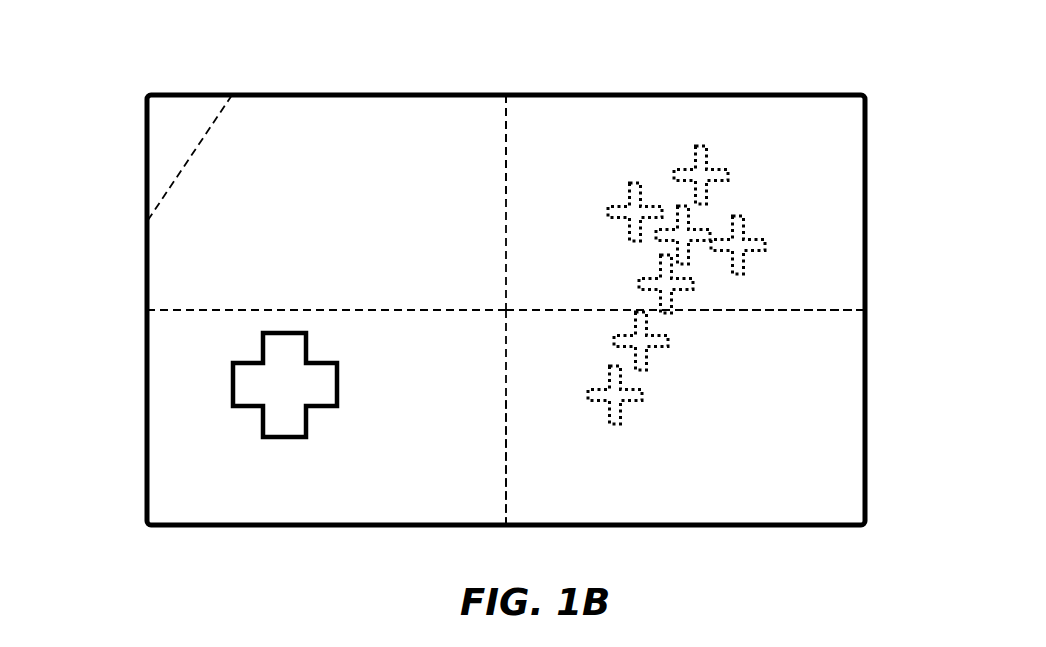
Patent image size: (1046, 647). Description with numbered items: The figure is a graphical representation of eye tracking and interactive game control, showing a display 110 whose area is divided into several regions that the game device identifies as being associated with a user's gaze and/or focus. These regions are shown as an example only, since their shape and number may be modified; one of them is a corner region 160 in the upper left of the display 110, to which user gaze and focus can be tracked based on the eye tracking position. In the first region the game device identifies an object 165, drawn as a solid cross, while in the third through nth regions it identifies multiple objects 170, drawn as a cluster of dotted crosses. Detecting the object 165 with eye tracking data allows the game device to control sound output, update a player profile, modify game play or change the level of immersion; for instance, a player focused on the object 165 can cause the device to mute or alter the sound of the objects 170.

The display 110 is at (138, 70).
The corner region 160 is at (162, 123).
The object 165 is at (338, 392).
The objects 170 is at (785, 332).